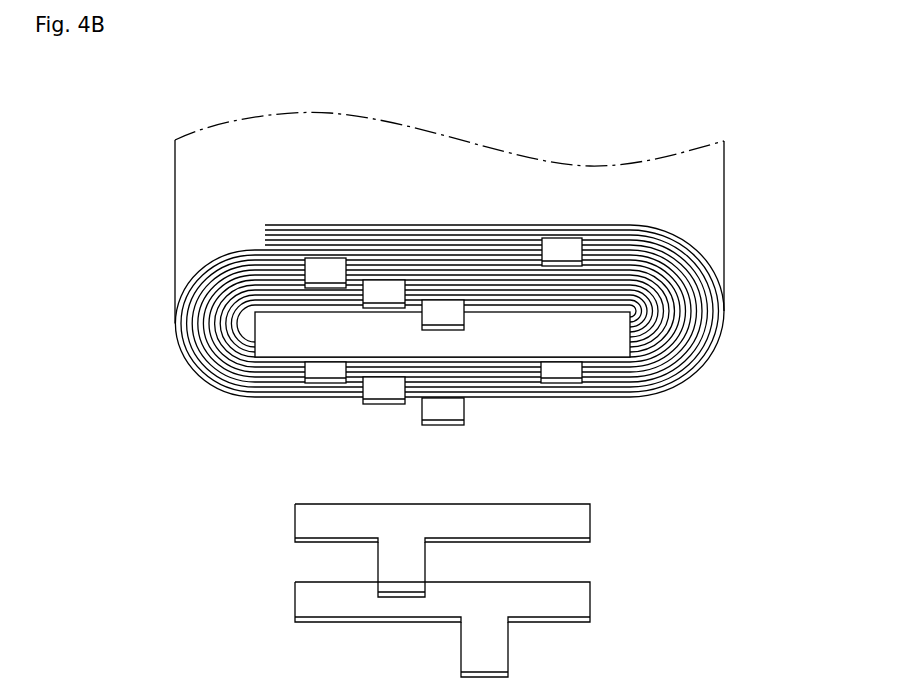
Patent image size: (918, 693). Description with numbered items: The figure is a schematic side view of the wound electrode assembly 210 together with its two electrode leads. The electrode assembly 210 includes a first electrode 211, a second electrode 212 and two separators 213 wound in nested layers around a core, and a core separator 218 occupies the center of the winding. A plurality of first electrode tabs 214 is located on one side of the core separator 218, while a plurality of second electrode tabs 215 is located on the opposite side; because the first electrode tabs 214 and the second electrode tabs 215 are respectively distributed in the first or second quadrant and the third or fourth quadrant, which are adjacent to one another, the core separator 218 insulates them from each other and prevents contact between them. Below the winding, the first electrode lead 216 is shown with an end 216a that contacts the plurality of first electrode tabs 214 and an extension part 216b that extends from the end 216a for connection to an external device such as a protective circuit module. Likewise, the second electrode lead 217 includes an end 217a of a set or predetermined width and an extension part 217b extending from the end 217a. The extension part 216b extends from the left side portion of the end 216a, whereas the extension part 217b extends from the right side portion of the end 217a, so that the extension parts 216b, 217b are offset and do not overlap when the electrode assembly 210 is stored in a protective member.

The electrode assembly 210 is at (117, 88).
The first electrode 211 is at (702, 255).
The second electrode 212 is at (707, 313).
The separators 213 is at (708, 282).
The first electrode tabs 214 is at (560, 242).
The second electrode tabs 215 is at (317, 373).
The first electrode lead 216 is at (362, 550).
The end 216a is at (302, 518).
The extension part 216b is at (385, 565).
The second electrode lead 217 is at (525, 629).
The end 217a is at (582, 605).
The extension part 217b is at (503, 660).
The core separator 218 is at (603, 345).